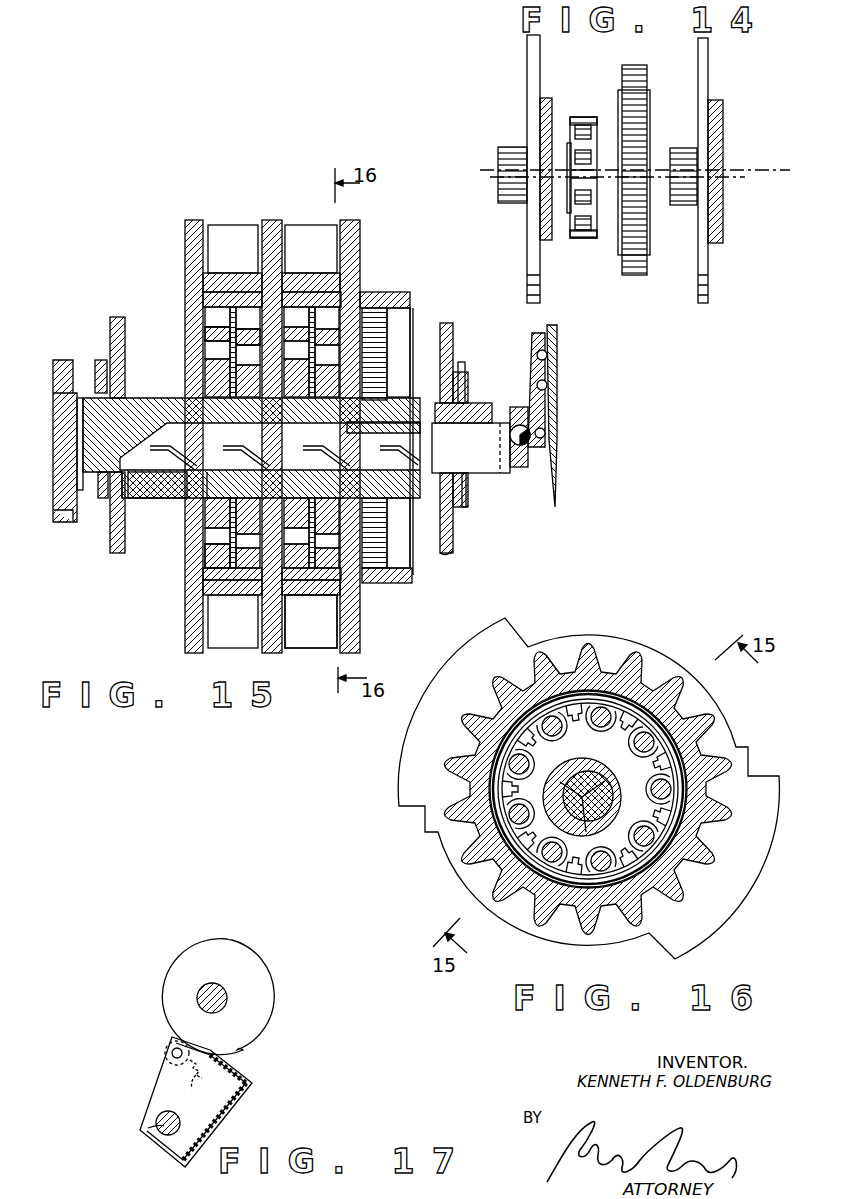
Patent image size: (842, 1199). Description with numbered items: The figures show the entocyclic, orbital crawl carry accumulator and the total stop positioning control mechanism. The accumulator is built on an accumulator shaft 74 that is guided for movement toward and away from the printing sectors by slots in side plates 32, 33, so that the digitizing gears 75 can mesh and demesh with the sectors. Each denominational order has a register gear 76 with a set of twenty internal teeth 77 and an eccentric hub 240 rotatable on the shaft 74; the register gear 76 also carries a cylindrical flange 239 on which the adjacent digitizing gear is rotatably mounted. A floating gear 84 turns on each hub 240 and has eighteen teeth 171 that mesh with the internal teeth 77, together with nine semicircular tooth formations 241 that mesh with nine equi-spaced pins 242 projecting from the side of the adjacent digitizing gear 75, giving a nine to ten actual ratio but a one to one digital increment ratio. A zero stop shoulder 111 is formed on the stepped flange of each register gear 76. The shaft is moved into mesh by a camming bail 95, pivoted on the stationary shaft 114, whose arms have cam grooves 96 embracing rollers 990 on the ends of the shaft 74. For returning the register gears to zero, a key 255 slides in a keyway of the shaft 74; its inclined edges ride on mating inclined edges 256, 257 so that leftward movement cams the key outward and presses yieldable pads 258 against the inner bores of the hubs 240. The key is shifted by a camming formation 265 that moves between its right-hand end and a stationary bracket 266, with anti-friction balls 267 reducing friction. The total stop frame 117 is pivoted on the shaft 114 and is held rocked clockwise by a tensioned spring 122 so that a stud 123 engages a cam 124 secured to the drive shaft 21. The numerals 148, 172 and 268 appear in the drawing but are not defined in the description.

In FIG. 17, the drive shaft 21 is at (226, 998).
In FIG. 15, the side plate 32 is at (118, 552).
In FIG. 15, the side plate 33 is at (454, 550).
In FIG. 15, the accumulator shaft 74 is at (475, 403).
In FIG. 16, the accumulator shaft 74 is at (578, 895).
In FIG. 14, the digitizing gear 75 is at (633, 65).
In FIG. 15, the digitizing gear 75 is at (301, 648).
In FIG. 16, the digitizing gear 75 is at (654, 648).
In FIG. 14, the register gear 76 is at (712, 100).
In FIG. 15, the register gear 76 is at (177, 633).
In FIG. 16, the register gear 76 is at (459, 887).
In FIG. 15, the internal teeth 77 is at (409, 314).
In FIG. 16, the internal teeth 77 is at (570, 698).
In FIG. 14, the floating gear 84 is at (576, 236).
In FIG. 15, the floating gear 84 is at (206, 375).
In FIG. 16, the floating gear 84 is at (640, 742).
In FIG. 15, the camming bail 95 is at (468, 504).
In FIG. 15, the cam grooves 96 is at (464, 362).
In FIG. 16, the zero stop shoulder 111 is at (410, 820).
In FIG. 17, the stationary shaft 114 is at (148, 1130).
In FIG. 17, the total stop frame 117 is at (230, 1114).
In FIG. 17, the tensioned spring 122 is at (192, 1087).
In FIG. 17, the stud 123 is at (165, 1063).
In FIG. 17, the cam 124 is at (164, 995).
In FIG. 14, the clutch assembly 148 is at (592, 117).
In FIG. 14, the teeth 171 is at (581, 114).
In FIG. 15, the teeth 171 is at (206, 350).
In FIG. 16, the teeth 171 is at (560, 885).
In FIG. 14, the flange 172 is at (546, 240).
In FIG. 15, the cylindrical flange 239 is at (210, 572).
In FIG. 14, the eccentric hub 240 is at (514, 150).
In FIG. 15, the eccentric hub 240 is at (158, 498).
In FIG. 16, the eccentric hub 240 is at (520, 800).
In FIG. 16, the semicircular tooth formations 241 is at (710, 696).
In FIG. 15, the pins 242 is at (365, 292).
In FIG. 16, the pins 242 is at (650, 730).
In FIG. 15, the key 255 is at (473, 462).
In FIG. 16, the key 255 is at (640, 812).
In FIG. 15, the inclined edge 256 is at (402, 410).
In FIG. 15, the inclined edge 257 is at (140, 436).
In FIG. 15, the yieldable pads 258 is at (410, 479).
In FIG. 15, the camming formation 265 is at (552, 383).
In FIG. 15, the stationary bracket 266 is at (548, 424).
In FIG. 15, the anti-friction balls 267 is at (547, 358).
In FIG. 15, the hub block 268 is at (53, 365).
In FIG. 15, the rollers 990 is at (102, 374).